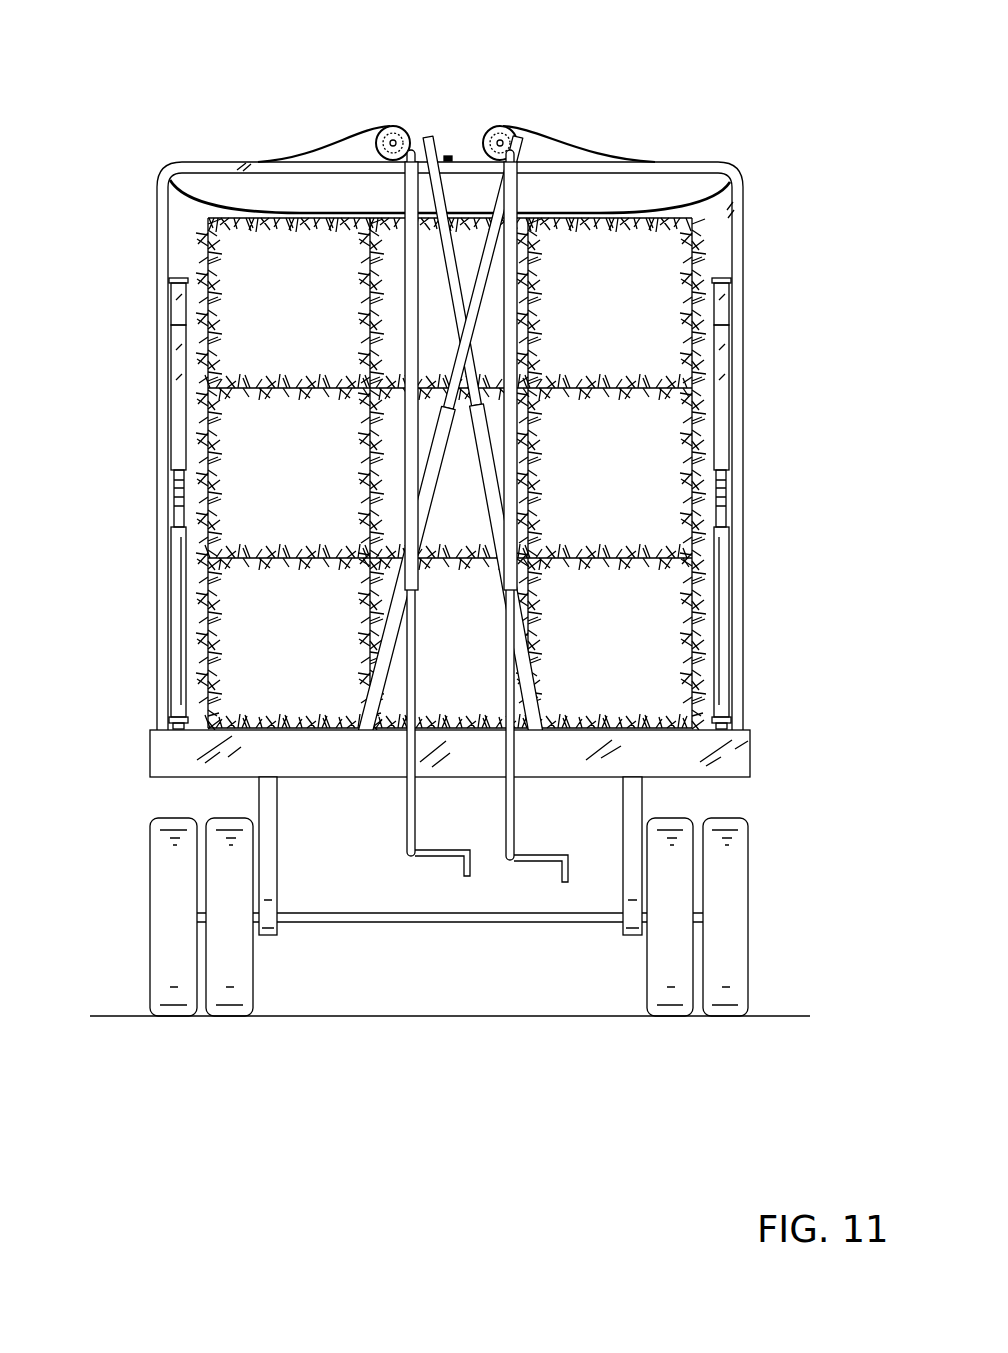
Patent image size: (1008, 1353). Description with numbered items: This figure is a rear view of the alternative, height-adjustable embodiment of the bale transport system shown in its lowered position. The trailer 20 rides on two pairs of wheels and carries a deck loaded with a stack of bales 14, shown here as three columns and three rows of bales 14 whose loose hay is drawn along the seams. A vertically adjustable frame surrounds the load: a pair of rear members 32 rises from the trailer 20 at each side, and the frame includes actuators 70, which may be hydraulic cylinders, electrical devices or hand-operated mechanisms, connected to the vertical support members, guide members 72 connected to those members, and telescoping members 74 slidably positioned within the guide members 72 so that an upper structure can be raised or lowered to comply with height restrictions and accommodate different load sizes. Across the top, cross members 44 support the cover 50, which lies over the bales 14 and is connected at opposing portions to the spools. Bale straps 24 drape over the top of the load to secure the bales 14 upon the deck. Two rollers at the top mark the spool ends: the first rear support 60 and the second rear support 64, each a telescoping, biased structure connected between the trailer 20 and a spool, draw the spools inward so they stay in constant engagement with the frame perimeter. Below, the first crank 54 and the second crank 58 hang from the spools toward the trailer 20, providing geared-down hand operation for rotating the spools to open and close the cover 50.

The bales 14 is at (632, 455).
The trailer 20 is at (745, 785).
The bale straps 24 is at (270, 160).
The rear members 32 is at (172, 492).
The cross members 44 is at (218, 160).
The cover 50 is at (470, 152).
The first crank 54 is at (515, 808).
The second crank 58 is at (407, 818).
The first rear support 60 is at (528, 137).
The second rear support 64 is at (418, 126).
The actuators 70 is at (176, 572).
The guide members 72 is at (172, 360).
The telescoping members 74 is at (172, 312).